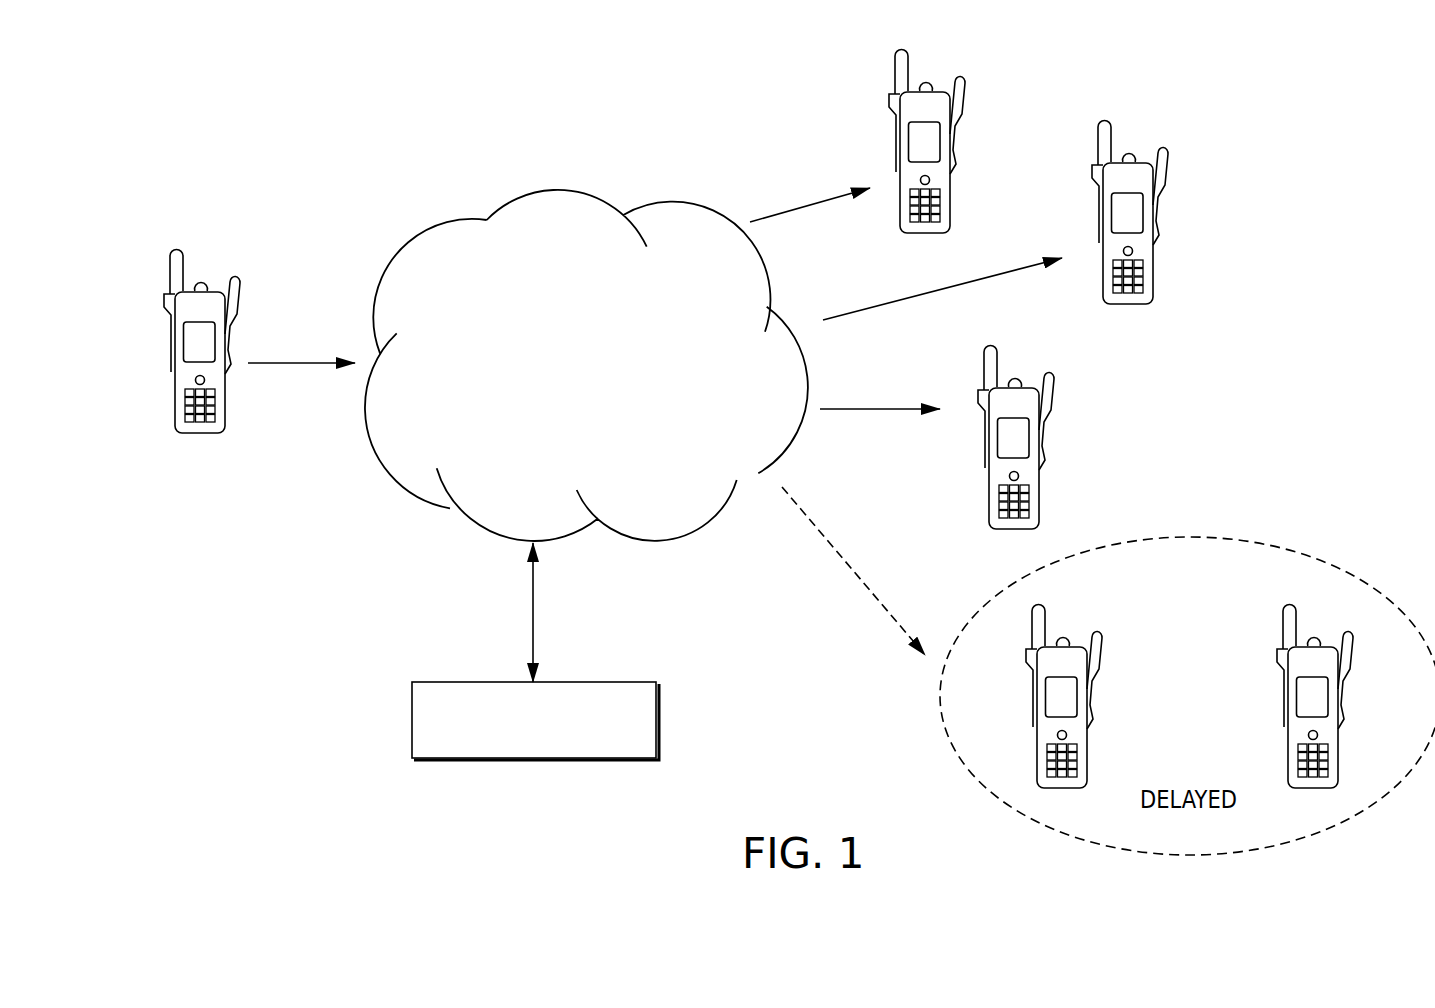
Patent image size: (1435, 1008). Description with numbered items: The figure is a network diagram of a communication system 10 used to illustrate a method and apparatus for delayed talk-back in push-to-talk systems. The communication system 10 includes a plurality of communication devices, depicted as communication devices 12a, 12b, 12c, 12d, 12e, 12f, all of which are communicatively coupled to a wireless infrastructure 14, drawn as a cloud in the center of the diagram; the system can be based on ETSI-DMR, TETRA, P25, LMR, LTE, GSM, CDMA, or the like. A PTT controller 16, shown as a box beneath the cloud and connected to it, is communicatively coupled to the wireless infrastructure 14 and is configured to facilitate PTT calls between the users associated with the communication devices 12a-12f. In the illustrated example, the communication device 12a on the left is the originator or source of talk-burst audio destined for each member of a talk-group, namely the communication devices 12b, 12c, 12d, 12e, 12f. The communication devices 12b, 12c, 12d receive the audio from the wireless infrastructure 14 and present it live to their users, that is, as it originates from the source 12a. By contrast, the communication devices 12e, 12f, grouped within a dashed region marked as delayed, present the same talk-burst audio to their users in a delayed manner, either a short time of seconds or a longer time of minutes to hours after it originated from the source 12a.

The communication system 10 is at (695, 98).
The communication device 12a is at (175, 363).
The communication device 12b is at (899, 164).
The communication device 12c is at (1102, 236).
The communication device 12d is at (988, 460).
The communication device 12e is at (1036, 718).
The communication device 12f is at (1287, 718).
The wireless infrastructure 14 is at (553, 190).
The PTT controller 16 is at (411, 720).